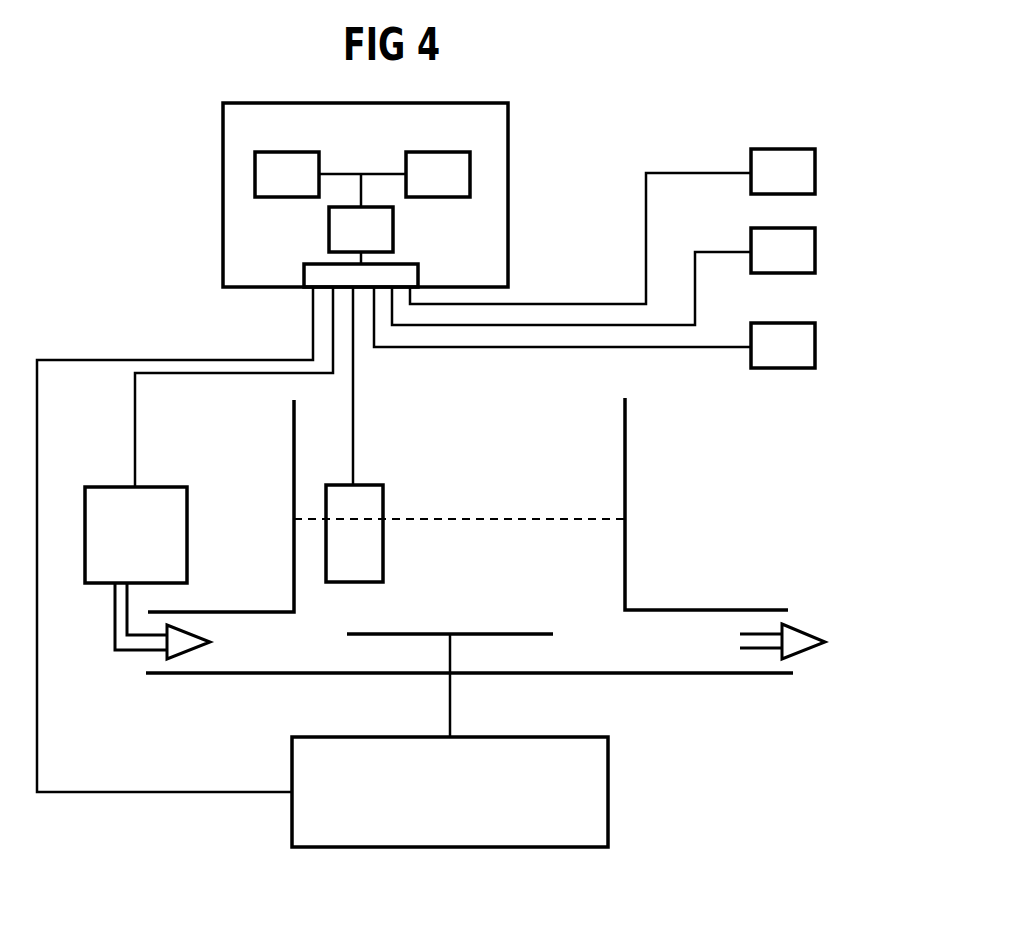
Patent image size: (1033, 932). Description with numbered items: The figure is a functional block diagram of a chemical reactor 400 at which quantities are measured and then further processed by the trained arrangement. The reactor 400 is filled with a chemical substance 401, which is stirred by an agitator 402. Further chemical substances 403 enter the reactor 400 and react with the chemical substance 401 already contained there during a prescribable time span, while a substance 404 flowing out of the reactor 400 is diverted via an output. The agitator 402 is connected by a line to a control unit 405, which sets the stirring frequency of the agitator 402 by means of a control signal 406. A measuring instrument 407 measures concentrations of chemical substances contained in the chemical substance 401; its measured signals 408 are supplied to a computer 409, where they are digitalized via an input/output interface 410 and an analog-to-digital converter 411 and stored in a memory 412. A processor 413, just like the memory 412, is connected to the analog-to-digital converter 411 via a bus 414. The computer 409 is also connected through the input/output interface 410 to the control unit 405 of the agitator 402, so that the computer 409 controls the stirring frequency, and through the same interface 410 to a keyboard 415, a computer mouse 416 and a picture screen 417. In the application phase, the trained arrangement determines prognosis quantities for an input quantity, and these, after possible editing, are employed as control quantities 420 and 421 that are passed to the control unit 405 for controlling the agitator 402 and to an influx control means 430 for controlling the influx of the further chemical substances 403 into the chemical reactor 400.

The chemical reactor 400 is at (538, 418).
The chemical substance 401 is at (625, 548).
The agitator 402 is at (450, 652).
The further chemical substances 403 is at (124, 650).
The substance flowing out 404 is at (825, 642).
The control unit 405 is at (608, 790).
The control signal 406 is at (450, 705).
The measuring instrument 407 is at (383, 493).
The measured signals 408 is at (353, 420).
The computer 409 is at (223, 126).
The input/output interface 410 is at (317, 270).
The analog-to-digital converter 411 is at (393, 227).
The memory 412 is at (471, 165).
The processor 413 is at (255, 177).
The bus 414 is at (360, 170).
The keyboard 415 is at (815, 347).
The computer mouse 416 is at (815, 252).
The picture screen 417 is at (815, 173).
The control quantity 420 is at (37, 432).
The control quantity 421 is at (135, 432).
The influx control means 430 is at (187, 530).